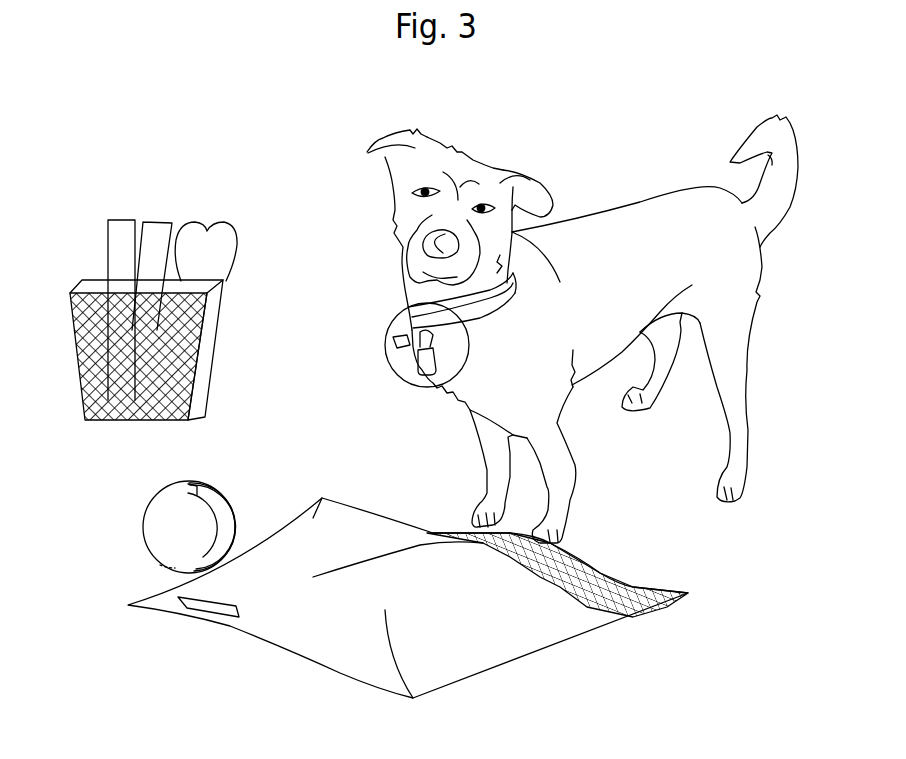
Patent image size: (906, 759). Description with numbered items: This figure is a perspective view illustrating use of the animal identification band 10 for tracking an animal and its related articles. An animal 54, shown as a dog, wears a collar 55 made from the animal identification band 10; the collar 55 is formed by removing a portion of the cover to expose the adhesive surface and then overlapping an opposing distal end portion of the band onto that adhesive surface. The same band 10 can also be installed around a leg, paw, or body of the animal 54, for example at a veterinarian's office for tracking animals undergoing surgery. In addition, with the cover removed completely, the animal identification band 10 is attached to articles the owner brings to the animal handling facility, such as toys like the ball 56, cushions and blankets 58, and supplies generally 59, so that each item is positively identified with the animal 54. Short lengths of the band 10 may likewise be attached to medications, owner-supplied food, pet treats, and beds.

The animal identification band 10 is at (405, 304).
The animal 54 is at (617, 240).
The collar 55 is at (447, 380).
The ball 56 is at (167, 528).
The cushions and blankets 58 is at (322, 497).
The supplies 59 is at (213, 318).